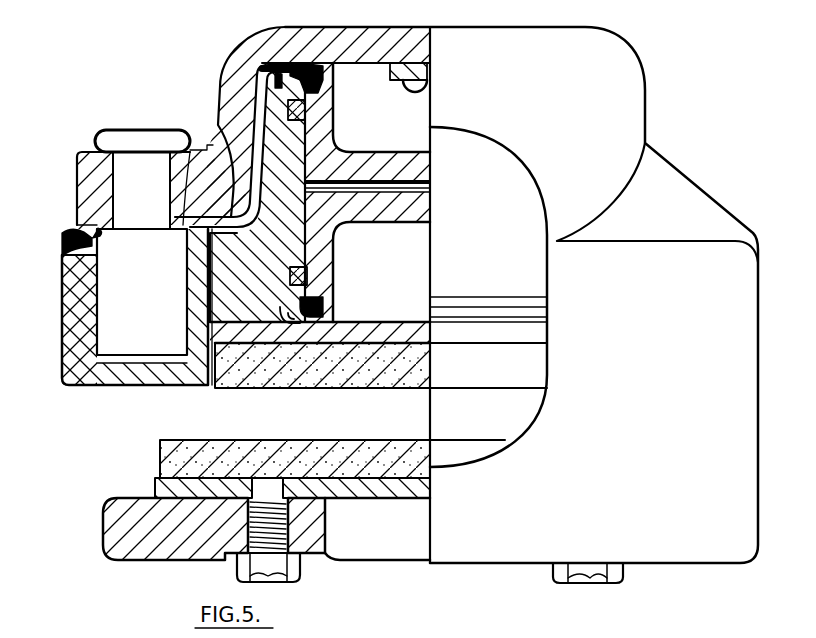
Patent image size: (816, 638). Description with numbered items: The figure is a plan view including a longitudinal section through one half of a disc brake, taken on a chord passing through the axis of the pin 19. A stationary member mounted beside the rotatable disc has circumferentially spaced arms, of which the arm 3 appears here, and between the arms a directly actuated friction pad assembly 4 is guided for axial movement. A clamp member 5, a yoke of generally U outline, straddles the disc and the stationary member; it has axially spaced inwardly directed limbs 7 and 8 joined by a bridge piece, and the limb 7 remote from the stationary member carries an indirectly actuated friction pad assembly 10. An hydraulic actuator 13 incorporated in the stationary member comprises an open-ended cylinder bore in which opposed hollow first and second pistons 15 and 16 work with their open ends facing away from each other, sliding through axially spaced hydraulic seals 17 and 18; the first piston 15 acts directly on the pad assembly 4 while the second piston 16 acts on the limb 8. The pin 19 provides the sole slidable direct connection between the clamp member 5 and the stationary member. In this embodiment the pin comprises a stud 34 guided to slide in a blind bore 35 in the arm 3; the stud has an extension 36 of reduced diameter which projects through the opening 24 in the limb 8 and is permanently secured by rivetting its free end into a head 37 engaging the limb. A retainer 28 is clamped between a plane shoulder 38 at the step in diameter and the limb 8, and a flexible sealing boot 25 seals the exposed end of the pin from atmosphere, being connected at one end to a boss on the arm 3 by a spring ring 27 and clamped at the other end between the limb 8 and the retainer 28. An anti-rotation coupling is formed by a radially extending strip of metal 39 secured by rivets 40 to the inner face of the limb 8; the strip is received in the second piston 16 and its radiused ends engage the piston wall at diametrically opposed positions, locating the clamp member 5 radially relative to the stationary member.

The arm 3 is at (108, 375).
The directly actuated friction pad assembly 4 is at (517, 370).
The clamp member 5 is at (646, 462).
The limb 7 is at (172, 542).
The limb 8 is at (402, 48).
The indirectly actuated friction pad assembly 10 is at (172, 459).
The hydraulic actuator 13 is at (407, 208).
The first piston 15 is at (328, 258).
The second piston 16 is at (320, 128).
The hydraulic seal 17 is at (310, 279).
The hydraulic seal 18 is at (312, 117).
The pin 19 is at (100, 337).
The opening 24 is at (110, 181).
The flexible sealing boot 25 is at (219, 135).
The spring ring 27 is at (72, 245).
The retainer 28 is at (182, 178).
The stud 34 is at (106, 307).
The blind bore 35 is at (95, 356).
The extension 36 is at (128, 198).
The head 37 is at (110, 142).
The plane shoulder 38 is at (108, 282).
The strip of metal 39 is at (420, 73).
The rivets 40 is at (422, 90).